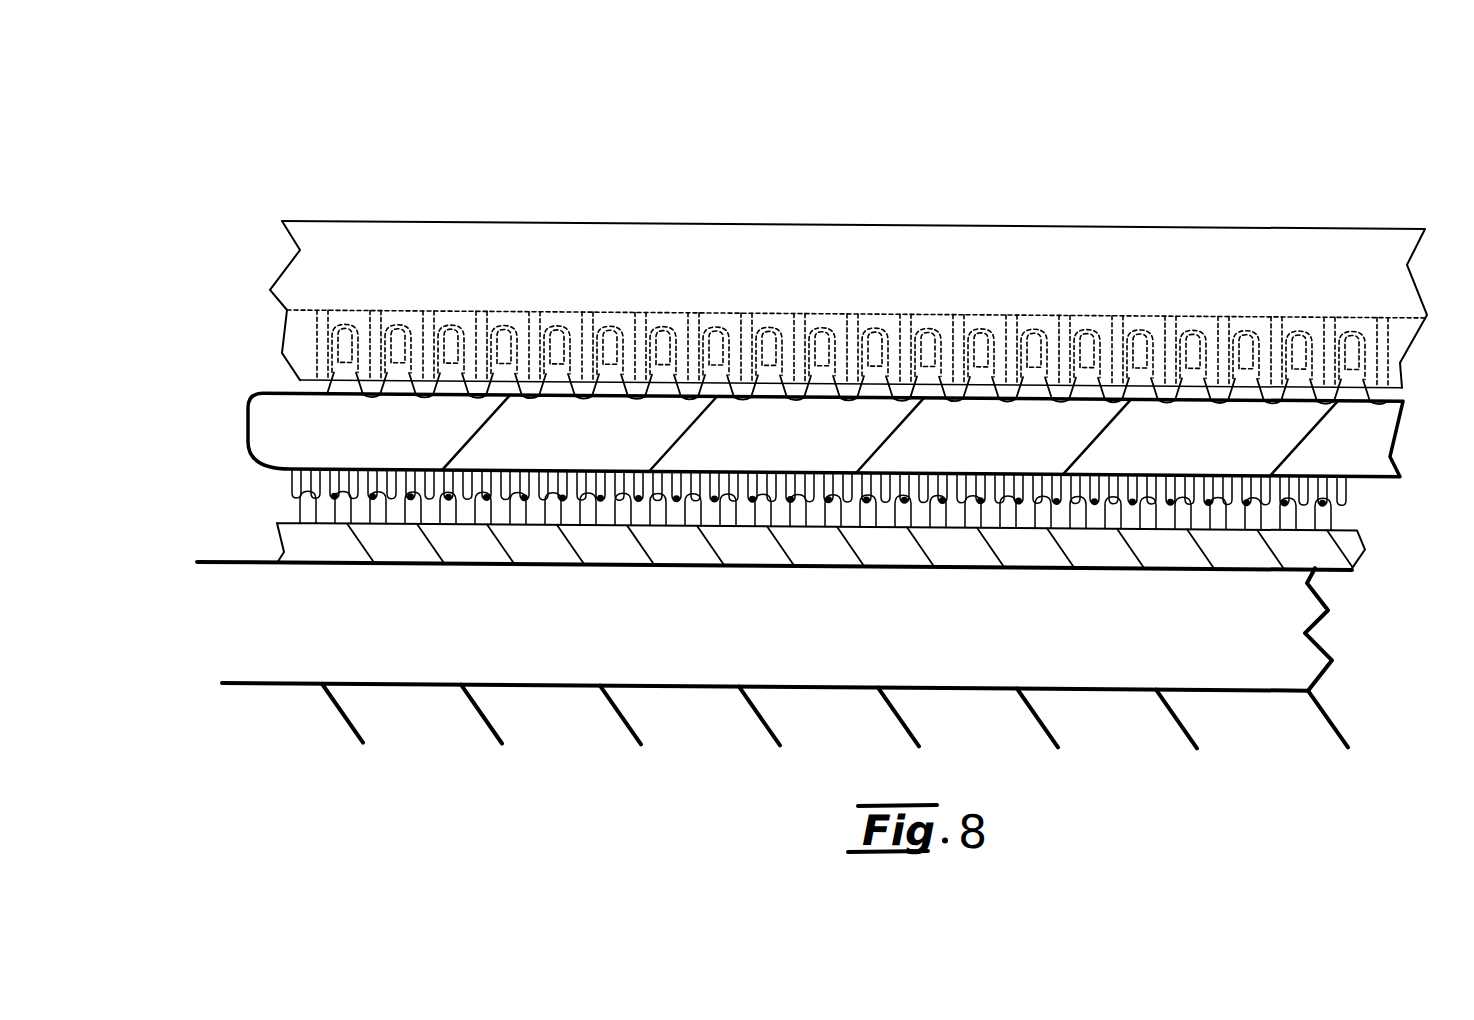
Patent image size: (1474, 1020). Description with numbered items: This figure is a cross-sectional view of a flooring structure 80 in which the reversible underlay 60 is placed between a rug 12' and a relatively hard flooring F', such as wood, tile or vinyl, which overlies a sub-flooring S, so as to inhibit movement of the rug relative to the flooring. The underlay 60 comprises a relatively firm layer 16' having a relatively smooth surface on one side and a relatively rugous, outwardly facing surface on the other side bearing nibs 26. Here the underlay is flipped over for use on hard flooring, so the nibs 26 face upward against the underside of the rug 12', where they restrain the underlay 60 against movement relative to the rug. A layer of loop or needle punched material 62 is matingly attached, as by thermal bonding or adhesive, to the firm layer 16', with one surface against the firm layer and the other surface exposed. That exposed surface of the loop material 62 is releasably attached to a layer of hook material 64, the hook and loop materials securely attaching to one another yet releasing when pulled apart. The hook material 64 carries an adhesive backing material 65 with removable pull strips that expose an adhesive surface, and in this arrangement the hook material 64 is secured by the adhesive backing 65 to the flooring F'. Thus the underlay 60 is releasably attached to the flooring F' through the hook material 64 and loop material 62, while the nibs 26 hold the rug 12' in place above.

The flooring structure 80 is at (1185, 178).
The rug 12' is at (848, 257).
The nibs 26 is at (658, 326).
The relatively firm layer 16' is at (831, 450).
The loop material 62 is at (287, 490).
The underlay 60 is at (245, 536).
The hook material 64 is at (1340, 494).
The adhesive backing material 65 is at (1347, 554).
The flooring F' is at (192, 634).
The sub-flooring S is at (785, 655).